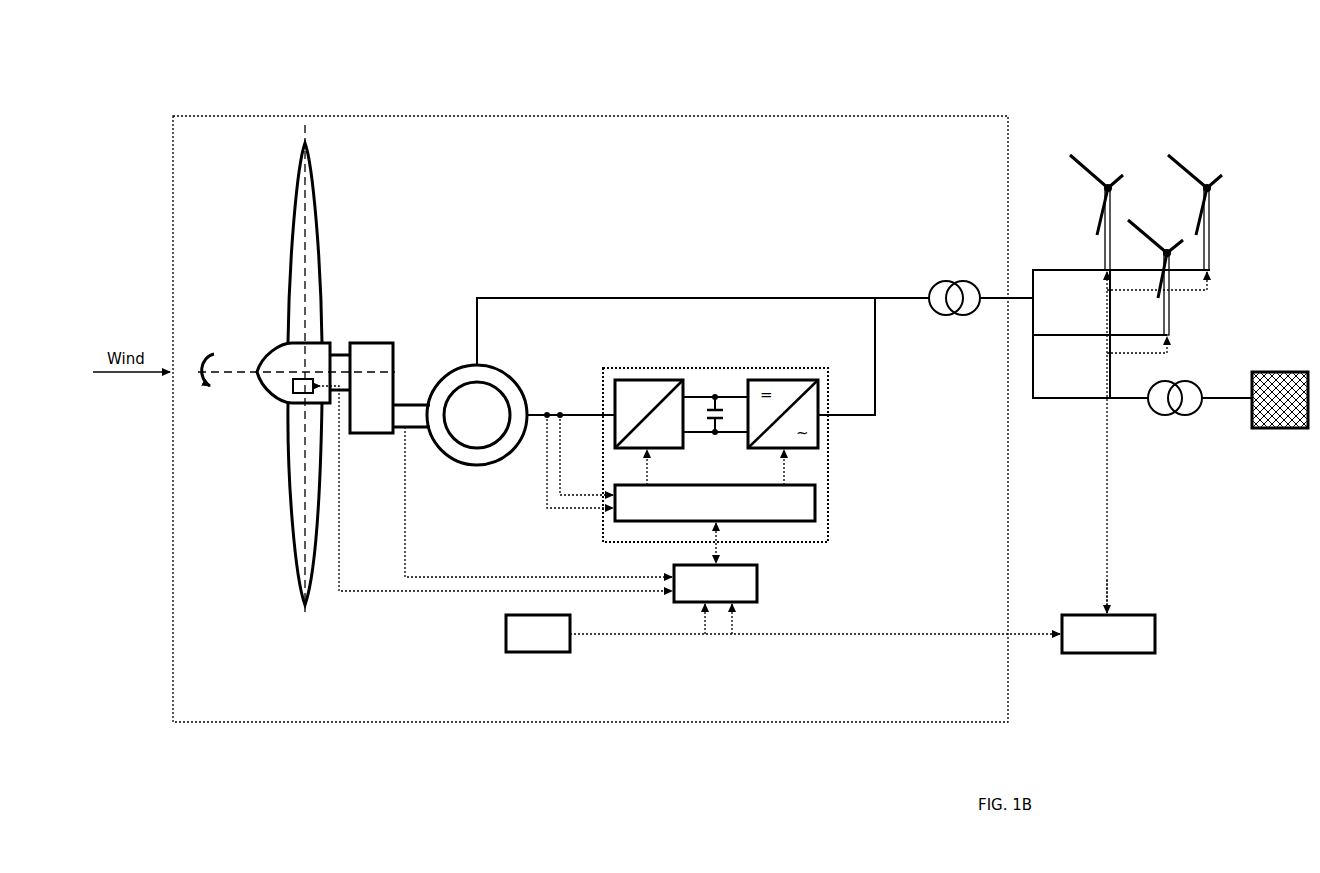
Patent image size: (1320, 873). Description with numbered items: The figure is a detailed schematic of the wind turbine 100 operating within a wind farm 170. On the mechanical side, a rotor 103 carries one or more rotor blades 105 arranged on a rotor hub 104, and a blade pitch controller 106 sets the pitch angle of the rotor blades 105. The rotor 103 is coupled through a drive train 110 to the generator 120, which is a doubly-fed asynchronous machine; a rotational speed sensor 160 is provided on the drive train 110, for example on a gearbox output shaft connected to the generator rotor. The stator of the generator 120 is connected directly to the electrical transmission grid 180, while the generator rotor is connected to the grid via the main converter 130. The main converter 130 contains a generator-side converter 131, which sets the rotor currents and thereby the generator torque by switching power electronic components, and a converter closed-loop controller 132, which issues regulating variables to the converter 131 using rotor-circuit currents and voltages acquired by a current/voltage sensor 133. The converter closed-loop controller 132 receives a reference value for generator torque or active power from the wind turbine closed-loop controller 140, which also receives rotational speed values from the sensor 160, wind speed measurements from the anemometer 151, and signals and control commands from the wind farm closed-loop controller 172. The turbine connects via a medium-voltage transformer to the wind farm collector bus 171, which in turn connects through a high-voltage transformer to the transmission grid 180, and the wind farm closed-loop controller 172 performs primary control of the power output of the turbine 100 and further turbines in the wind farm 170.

The wind turbine 100 is at (669, 97).
The rotor 103 is at (288, 230).
The rotor hub 104 is at (270, 348).
The rotor blades 105 is at (295, 482).
The blade pitch controller 106 is at (285, 405).
The drive train 110 is at (400, 430).
The rotational speed sensor 160 is at (403, 398).
The generator 120 is at (488, 468).
The current/voltage sensor 133 is at (548, 412).
The generator-side converter 131 is at (645, 383).
The converter closed-loop controller 132 is at (620, 521).
The main converter 130 is at (828, 542).
The wind turbine closed-loop controller 140 is at (757, 580).
The anemometer 151 is at (548, 636).
The wind farm 170 is at (1148, 145).
The wind farm collector bus 171 is at (1060, 400).
The wind farm closed-loop controller 172 is at (1118, 640).
The electrical transmission grid 180 is at (1285, 430).